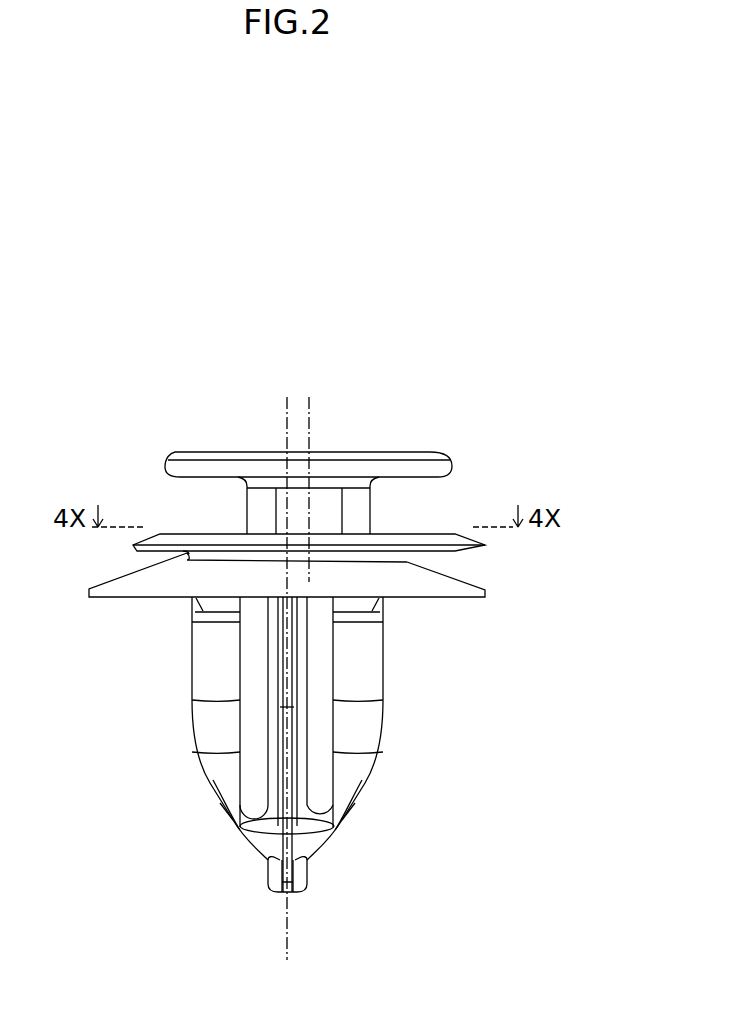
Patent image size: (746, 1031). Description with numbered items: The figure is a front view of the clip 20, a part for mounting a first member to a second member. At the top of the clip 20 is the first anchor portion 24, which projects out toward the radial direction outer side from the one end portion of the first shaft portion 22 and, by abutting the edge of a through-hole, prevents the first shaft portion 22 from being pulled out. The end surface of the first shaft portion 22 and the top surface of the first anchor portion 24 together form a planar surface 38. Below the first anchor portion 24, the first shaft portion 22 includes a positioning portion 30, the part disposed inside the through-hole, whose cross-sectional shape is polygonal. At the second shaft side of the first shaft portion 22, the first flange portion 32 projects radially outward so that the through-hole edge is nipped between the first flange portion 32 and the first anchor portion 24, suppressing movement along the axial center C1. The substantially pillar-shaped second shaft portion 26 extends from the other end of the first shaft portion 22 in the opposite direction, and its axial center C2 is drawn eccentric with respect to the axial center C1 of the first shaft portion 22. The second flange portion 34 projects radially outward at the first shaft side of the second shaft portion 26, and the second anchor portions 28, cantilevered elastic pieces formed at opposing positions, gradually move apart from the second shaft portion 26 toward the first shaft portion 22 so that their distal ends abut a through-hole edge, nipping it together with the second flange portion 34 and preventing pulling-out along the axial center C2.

The clip 20 is at (481, 330).
The first shaft portion 22 is at (422, 503).
The first anchor portion 24 is at (452, 467).
The second shaft portion 26 is at (292, 897).
The second anchor portions 28 is at (191, 670).
The positioning portion 30 is at (373, 500).
The first flange portion 32 is at (485, 545).
The second flange portion 34 is at (485, 592).
The planar surface 38 is at (247, 451).
The axial center of the first shaft portion C1 is at (309, 412).
The axial center of the second shaft portion C2 is at (288, 948).